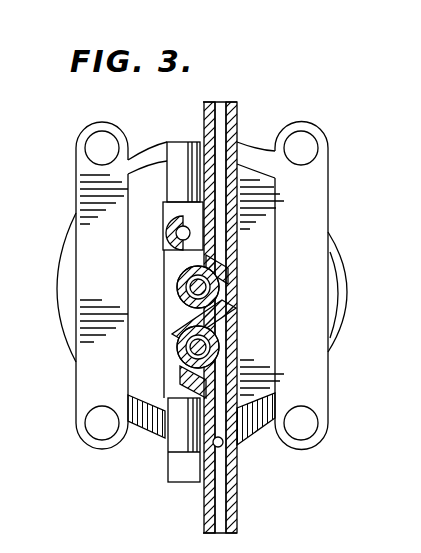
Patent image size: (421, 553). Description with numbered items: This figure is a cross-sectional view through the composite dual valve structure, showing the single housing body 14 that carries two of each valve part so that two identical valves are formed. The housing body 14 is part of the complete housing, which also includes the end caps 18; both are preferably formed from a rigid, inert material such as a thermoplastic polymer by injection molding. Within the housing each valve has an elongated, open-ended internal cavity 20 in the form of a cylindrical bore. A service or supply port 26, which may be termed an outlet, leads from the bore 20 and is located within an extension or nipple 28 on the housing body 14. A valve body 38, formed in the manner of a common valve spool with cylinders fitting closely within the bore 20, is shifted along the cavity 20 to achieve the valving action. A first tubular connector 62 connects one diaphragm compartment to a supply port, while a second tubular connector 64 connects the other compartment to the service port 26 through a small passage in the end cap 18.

The housing body 14 is at (255, 237).
The end cap 18 is at (62, 332).
The internal cavity 20 is at (172, 288).
The service port 26 is at (210, 103).
The extension 28 is at (206, 128).
The valve body 38 is at (222, 280).
The first tubular connector 62 is at (176, 236).
The second tubular connector 64 is at (223, 444).